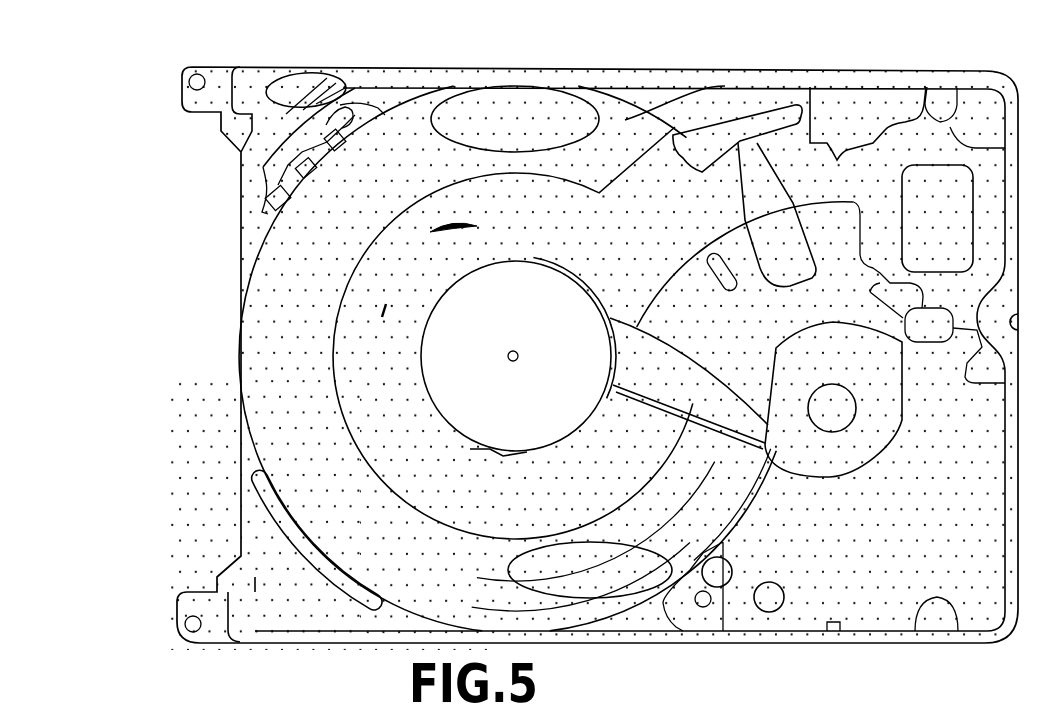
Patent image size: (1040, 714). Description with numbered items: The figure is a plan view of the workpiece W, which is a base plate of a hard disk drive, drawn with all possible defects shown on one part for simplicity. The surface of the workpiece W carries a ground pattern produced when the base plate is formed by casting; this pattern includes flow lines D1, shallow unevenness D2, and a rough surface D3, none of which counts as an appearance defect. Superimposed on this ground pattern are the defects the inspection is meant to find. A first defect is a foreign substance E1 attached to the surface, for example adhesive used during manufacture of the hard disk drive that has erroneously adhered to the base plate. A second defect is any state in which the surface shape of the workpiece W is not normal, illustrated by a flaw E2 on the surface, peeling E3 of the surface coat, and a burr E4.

The workpiece W is at (115, 612).
The flow lines D1 is at (303, 68).
The shallow unevenness D2 is at (588, 598).
The rough surface D3 is at (518, 95).
The foreign substance E1 is at (415, 225).
The flaw E2 is at (368, 313).
The peeling E3 is at (478, 453).
The burr E4 is at (730, 590).